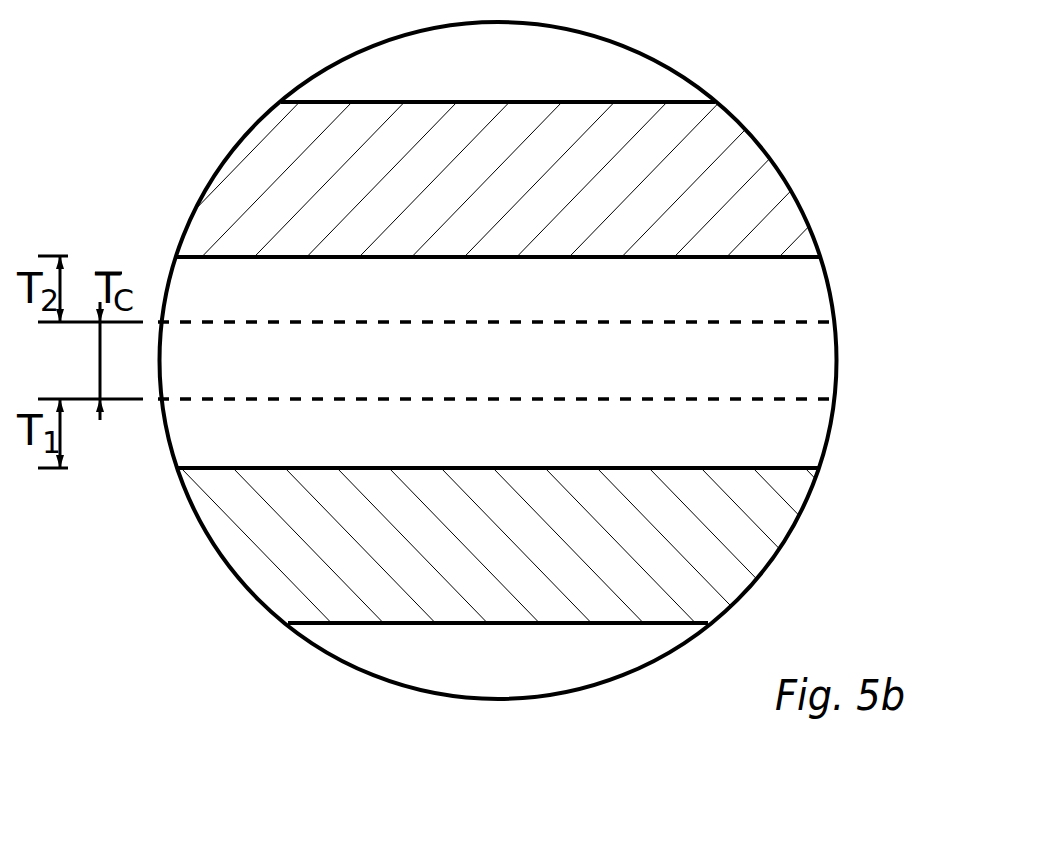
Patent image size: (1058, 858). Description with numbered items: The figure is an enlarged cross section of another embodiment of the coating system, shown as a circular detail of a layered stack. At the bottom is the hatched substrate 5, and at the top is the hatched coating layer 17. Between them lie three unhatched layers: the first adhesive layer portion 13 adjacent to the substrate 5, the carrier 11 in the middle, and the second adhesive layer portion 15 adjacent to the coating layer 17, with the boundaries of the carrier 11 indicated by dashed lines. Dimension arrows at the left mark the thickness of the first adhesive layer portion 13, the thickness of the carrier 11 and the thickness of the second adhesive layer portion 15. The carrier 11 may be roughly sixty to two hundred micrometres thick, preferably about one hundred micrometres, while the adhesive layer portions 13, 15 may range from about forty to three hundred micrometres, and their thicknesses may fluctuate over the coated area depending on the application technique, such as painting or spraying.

The substrate 5 is at (270, 555).
The carrier 11 is at (781, 362).
The first adhesive layer portion 13 is at (775, 431).
The second adhesive layer portion 15 is at (780, 293).
The coating layer 17 is at (742, 158).